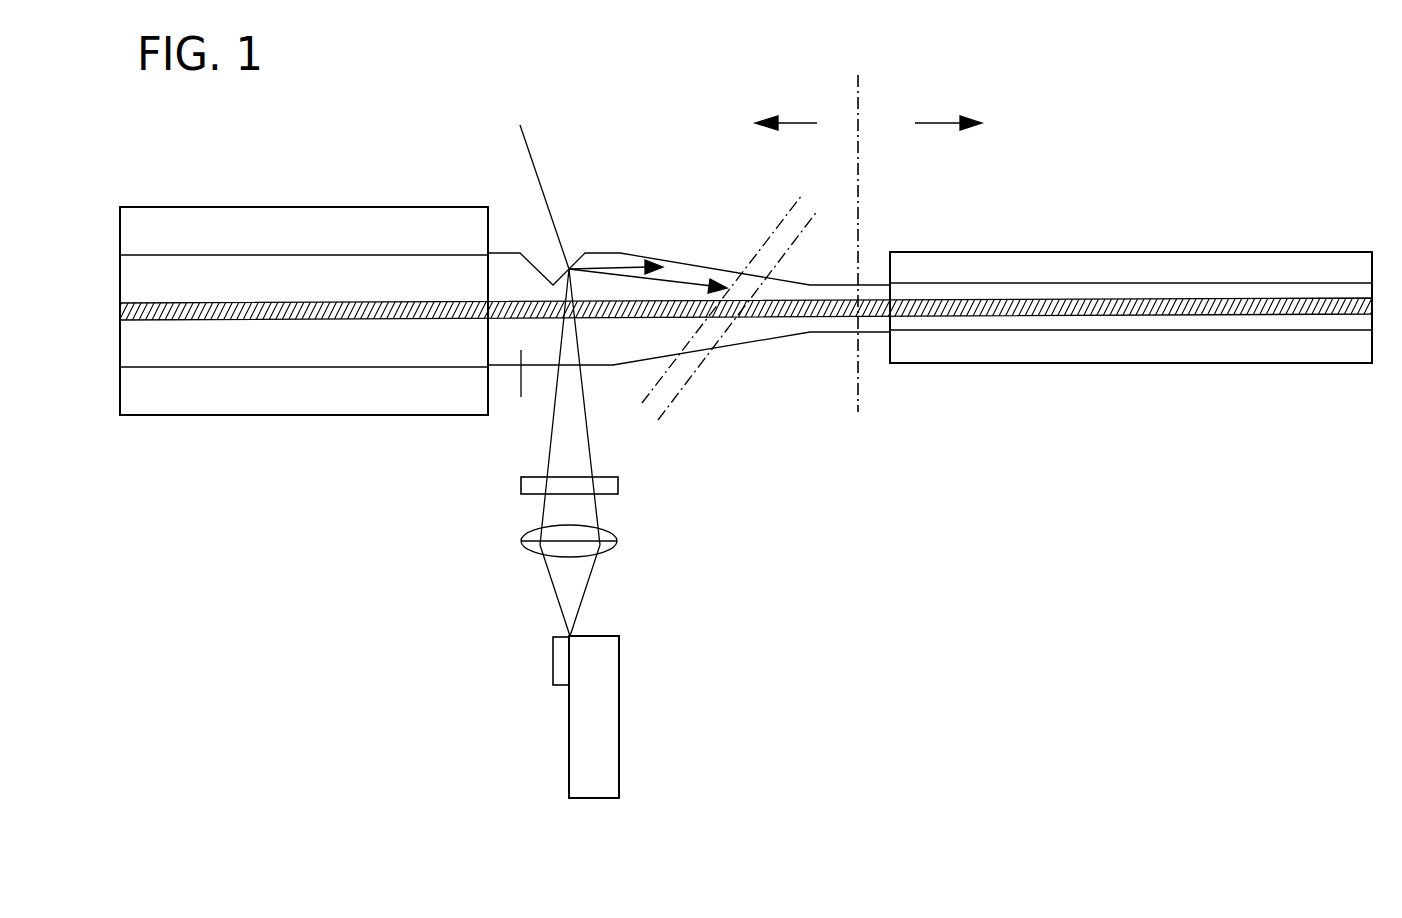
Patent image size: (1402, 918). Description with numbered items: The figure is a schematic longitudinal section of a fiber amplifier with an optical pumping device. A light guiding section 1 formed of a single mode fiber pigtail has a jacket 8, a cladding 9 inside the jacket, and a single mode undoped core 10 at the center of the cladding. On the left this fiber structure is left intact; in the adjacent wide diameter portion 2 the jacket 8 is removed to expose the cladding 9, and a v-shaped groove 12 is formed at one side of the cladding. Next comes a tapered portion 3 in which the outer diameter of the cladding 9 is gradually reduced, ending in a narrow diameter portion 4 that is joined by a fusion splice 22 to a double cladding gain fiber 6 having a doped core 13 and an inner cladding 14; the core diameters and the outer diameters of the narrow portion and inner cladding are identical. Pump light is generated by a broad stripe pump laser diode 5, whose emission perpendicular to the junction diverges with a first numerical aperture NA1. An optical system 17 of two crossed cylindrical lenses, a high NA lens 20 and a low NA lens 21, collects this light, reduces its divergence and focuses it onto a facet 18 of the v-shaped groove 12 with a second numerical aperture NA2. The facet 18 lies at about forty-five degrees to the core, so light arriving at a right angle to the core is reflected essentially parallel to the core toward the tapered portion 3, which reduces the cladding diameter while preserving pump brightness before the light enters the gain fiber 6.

The light guiding section 1 is at (797, 122).
The wide diameter portion 2 is at (521, 394).
The tapered portion 3 is at (648, 348).
The narrow diameter portion 4 is at (835, 322).
The broad stripe pump laser diode 5 is at (602, 700).
The double cladding gain fiber 6 is at (930, 123).
The jacket 8 is at (297, 222).
The cladding 9 is at (376, 270).
The single mode undoped core 10 is at (415, 317).
The v-shaped groove 12 is at (576, 206).
The doped core 13 is at (950, 308).
The inner cladding 14 is at (993, 289).
The optical system 17 is at (668, 535).
The facet 18 is at (546, 361).
The high NA lens 20 is at (568, 542).
The low NA lens 21 is at (532, 487).
The fusion splice 22 is at (860, 340).
The first numerical aperture NA1 is at (568, 587).
The second numerical aperture NA2 is at (585, 445).